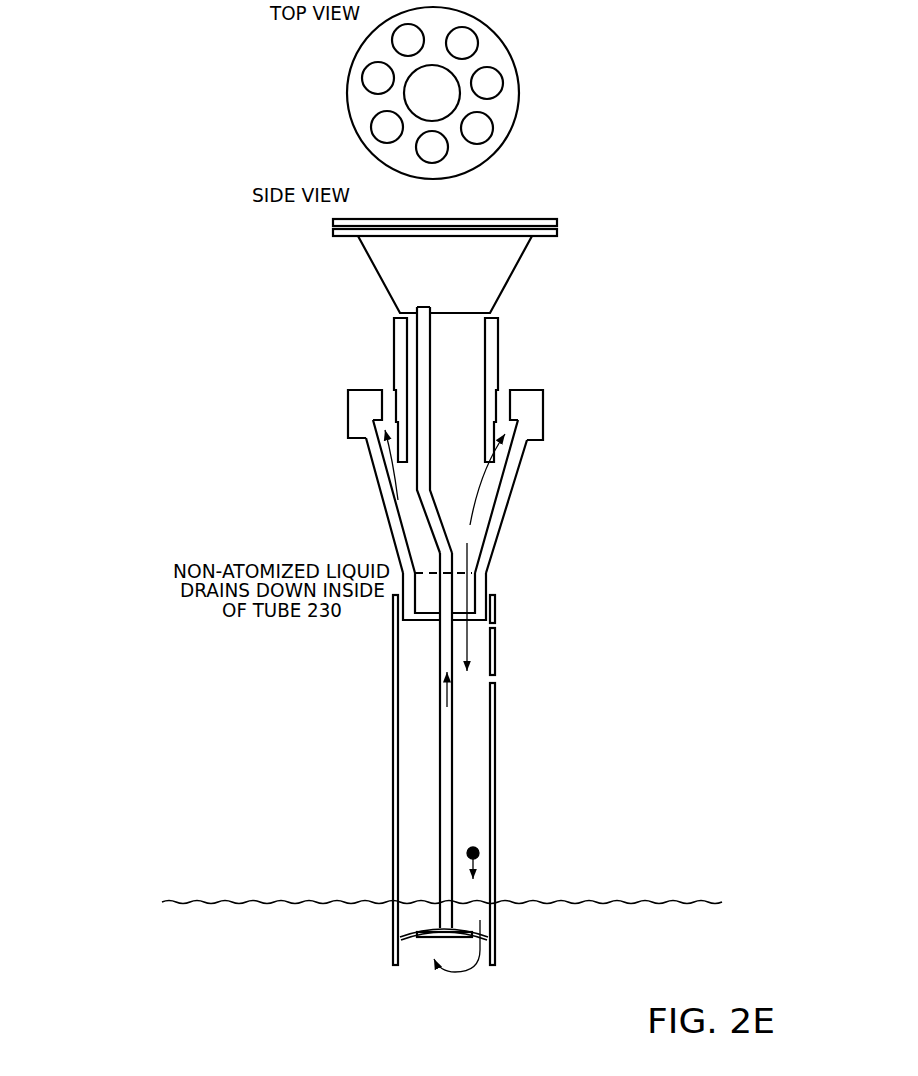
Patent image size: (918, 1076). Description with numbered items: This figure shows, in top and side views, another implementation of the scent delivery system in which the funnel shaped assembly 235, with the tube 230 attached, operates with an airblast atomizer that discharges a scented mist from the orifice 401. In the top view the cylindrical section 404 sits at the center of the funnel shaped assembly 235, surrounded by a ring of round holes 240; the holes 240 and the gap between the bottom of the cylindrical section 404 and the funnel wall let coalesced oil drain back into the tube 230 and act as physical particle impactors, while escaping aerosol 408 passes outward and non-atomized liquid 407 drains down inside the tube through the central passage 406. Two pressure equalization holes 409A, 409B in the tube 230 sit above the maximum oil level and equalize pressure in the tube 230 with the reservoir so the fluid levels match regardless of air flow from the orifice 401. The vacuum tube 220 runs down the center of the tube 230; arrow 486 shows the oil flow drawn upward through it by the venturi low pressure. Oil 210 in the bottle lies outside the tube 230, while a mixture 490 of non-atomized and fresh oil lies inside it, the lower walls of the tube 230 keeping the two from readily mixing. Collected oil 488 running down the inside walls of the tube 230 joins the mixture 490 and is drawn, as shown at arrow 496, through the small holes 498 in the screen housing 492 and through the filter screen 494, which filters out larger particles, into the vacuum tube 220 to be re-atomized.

The funnel shaped assembly 235 is at (508, 142).
The round holes 240 is at (502, 88).
The cylindrical section 404 is at (414, 105).
The orifice 401 is at (465, 308).
The central aerosol passage 406 is at (454, 391).
The escaping aerosol flow 408 is at (385, 388).
The collection region 407 is at (467, 600).
The pressure equalization hole 409A is at (504, 623).
The pressure equalization hole 409B is at (504, 677).
The tube 230 is at (495, 822).
The vacuum tube 220 is at (440, 740).
The arrow showing flow through the vacuum tube 486 is at (447, 692).
The collected oil 488 is at (473, 847).
The mixture of non-atomized and fresh oil 490 is at (420, 891).
The oil 210 is at (406, 955).
The screen housing 492 is at (460, 918).
The filter screen 494 is at (464, 941).
The small holes 498 is at (425, 990).
The arrow showing recirculation of oil 496 is at (498, 1017).